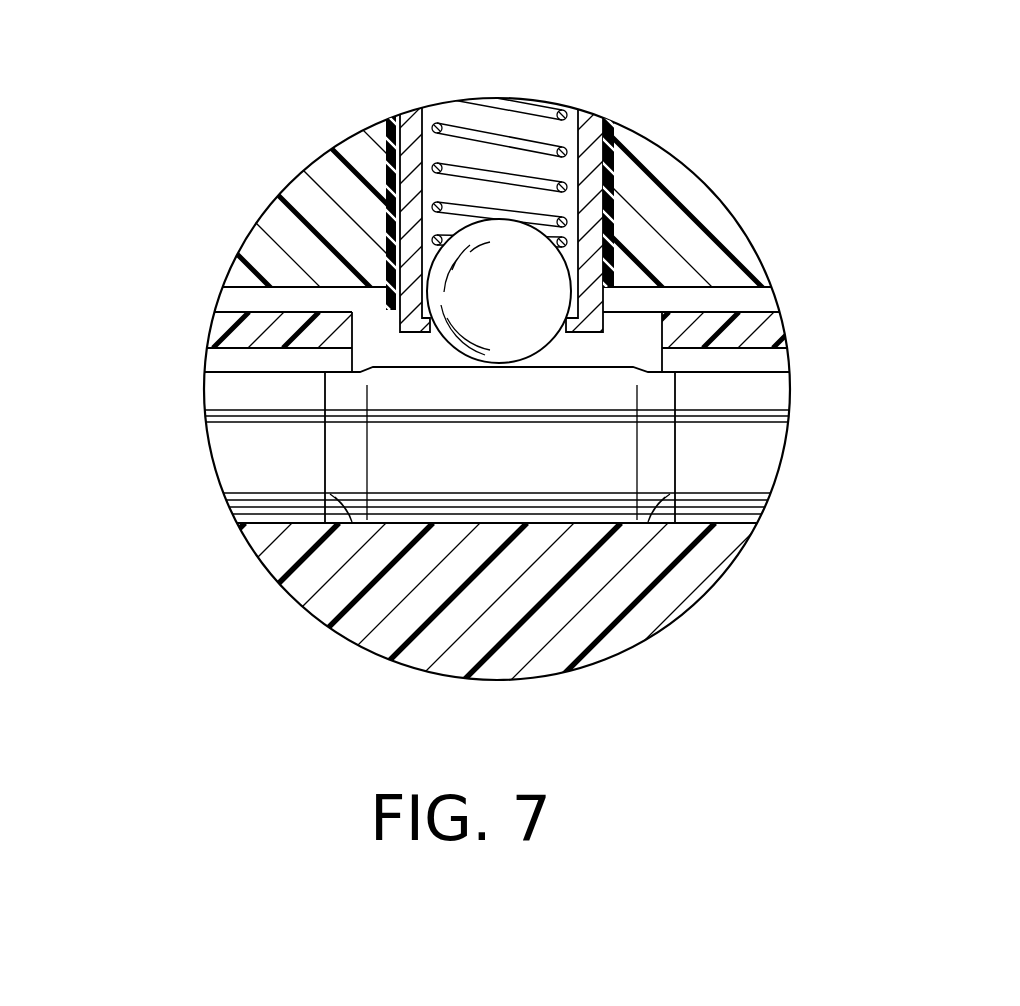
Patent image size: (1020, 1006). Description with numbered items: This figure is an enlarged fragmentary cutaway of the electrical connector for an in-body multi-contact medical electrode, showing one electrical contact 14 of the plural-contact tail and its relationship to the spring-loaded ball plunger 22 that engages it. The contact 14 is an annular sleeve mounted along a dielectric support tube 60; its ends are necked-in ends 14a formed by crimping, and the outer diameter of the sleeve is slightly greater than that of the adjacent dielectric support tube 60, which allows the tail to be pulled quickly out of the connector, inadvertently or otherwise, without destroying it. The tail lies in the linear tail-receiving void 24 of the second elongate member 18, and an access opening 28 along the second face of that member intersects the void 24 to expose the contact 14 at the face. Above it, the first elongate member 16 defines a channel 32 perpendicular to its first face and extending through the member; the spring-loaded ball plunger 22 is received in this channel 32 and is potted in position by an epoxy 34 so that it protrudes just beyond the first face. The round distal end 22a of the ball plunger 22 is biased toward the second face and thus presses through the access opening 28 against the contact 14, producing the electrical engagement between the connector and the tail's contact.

The electrical contact 14 is at (430, 493).
The necked-in end 14a is at (348, 497).
The first elongate member 16 is at (668, 178).
The second elongate member 18 is at (447, 638).
The spring-loaded ball plunger 22 is at (481, 130).
The round distal end 22a is at (515, 345).
The linear tail-receiving void 24 is at (250, 362).
The access opening 28 is at (382, 337).
The channel 32 is at (612, 130).
The epoxy 34 is at (516, 211).
The dielectric support tube 60 is at (752, 465).